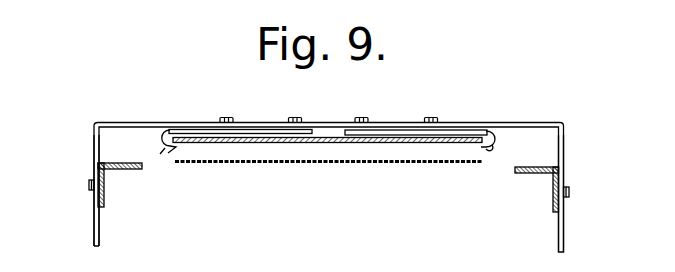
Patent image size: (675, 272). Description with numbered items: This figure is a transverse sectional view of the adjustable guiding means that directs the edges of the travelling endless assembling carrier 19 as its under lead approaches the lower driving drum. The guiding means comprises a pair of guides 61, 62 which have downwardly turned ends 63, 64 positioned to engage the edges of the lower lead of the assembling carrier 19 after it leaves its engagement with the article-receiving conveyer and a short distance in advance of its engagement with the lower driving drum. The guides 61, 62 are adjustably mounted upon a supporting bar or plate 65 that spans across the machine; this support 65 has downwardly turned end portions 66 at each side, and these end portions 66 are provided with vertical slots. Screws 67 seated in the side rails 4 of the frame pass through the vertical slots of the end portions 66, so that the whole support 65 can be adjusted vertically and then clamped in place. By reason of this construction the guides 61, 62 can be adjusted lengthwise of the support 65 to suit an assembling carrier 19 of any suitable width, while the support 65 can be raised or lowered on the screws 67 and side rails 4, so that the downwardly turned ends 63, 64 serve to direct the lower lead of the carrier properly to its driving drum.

The side rails 4 is at (120, 169).
The endless assembling carrier 19 is at (373, 143).
The guide 61 is at (453, 132).
The guide 62 is at (253, 131).
The downwardly turned end 63 is at (494, 148).
The downwardly turned end 64 is at (168, 146).
The supporting bar or plate 65 is at (505, 126).
The downwardly turned end portions 66 is at (94, 150).
The screws 67 is at (89, 189).